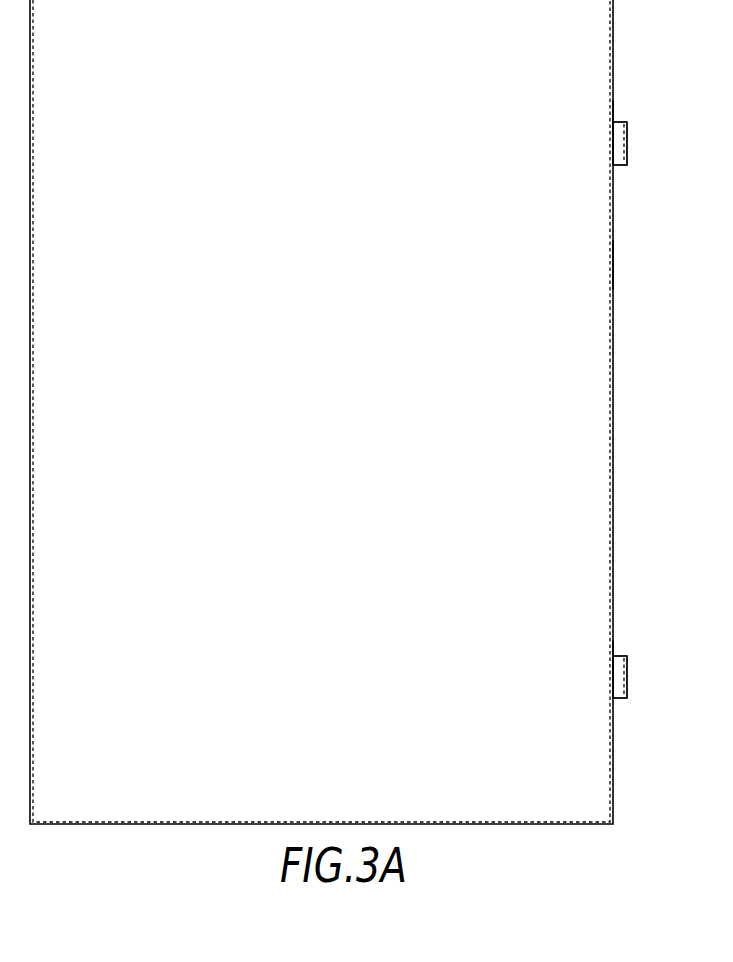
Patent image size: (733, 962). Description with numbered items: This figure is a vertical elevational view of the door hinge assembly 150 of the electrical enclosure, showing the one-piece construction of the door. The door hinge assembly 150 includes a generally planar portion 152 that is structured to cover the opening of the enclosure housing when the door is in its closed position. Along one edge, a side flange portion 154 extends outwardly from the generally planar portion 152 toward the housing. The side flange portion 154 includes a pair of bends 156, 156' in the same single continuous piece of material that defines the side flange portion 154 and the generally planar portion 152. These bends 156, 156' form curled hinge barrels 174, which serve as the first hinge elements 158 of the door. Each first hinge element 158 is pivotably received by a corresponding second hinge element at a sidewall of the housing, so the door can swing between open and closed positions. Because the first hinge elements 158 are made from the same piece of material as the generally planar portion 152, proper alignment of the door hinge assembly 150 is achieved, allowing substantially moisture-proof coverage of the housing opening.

The door hinge assembly 150 is at (626, 828).
The generally planar portion 152 is at (352, 461).
The side flange portion 154 is at (613, 257).
The bend 156 is at (594, 667).
The bend 156' is at (584, 139).
The first hinge element 158 is at (628, 106).
The curled hinge barrel 174 is at (618, 165).